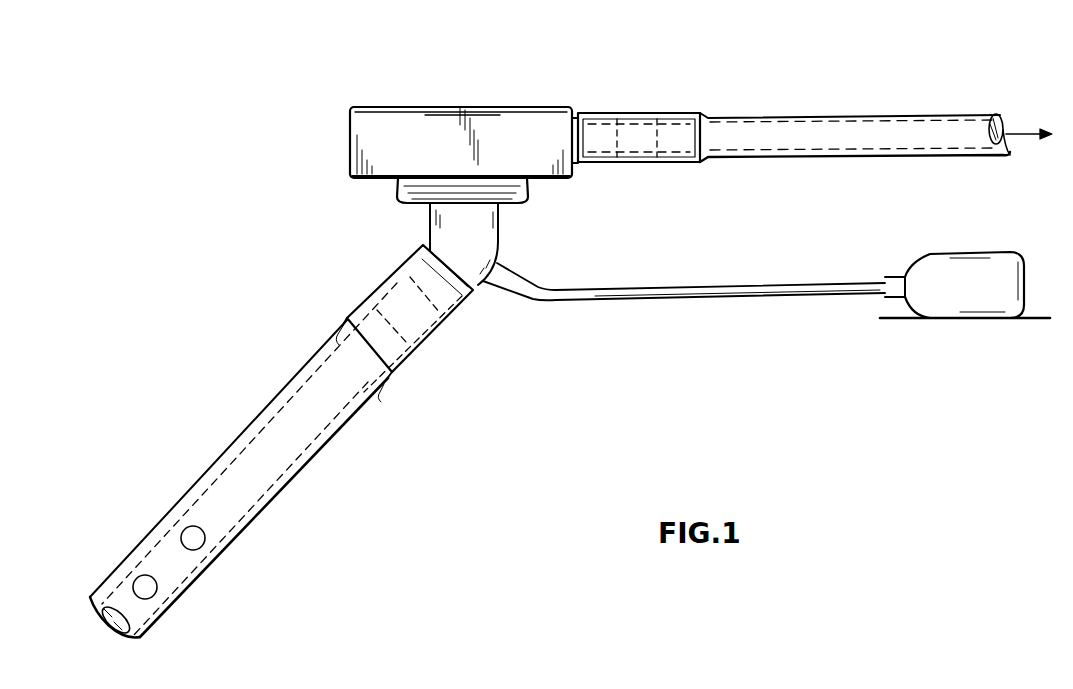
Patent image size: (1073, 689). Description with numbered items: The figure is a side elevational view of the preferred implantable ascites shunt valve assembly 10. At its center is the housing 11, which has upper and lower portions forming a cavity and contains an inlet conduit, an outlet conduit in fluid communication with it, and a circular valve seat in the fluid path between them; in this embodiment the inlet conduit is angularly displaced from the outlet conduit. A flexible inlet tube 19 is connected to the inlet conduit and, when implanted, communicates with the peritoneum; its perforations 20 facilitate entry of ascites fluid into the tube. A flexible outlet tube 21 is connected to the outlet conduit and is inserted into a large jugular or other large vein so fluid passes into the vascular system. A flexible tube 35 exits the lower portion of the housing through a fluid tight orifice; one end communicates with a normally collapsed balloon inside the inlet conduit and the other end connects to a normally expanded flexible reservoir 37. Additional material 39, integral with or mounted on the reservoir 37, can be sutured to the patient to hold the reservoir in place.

The ascites shunt valve assembly 10 is at (511, 70).
The housing 11 is at (377, 132).
The flexible inlet tube 19 is at (302, 403).
The perforations 20 is at (203, 540).
The flexible outlet tube 21 is at (782, 138).
The flexible tube 35 is at (692, 290).
The flexible reservoir 37 is at (963, 278).
The additional material 39 is at (890, 318).